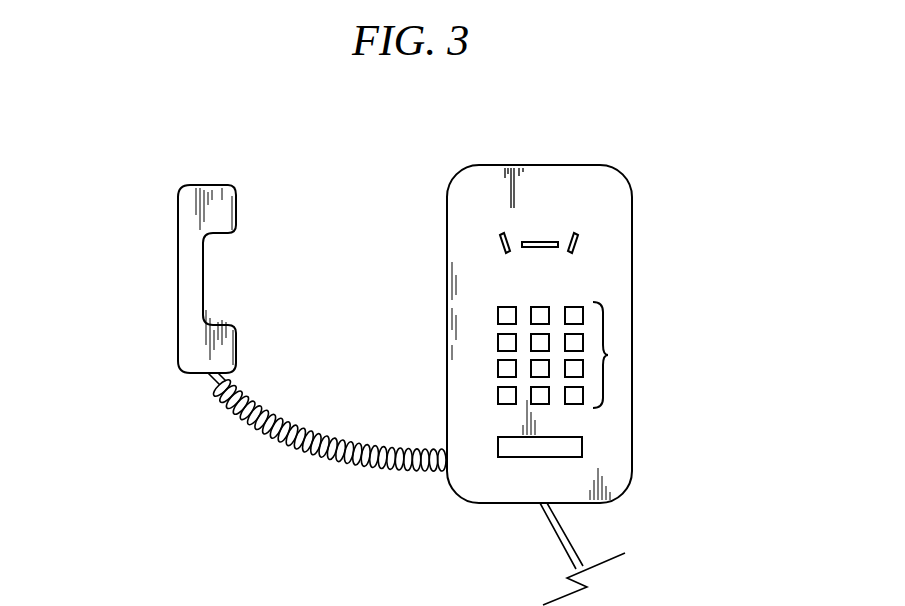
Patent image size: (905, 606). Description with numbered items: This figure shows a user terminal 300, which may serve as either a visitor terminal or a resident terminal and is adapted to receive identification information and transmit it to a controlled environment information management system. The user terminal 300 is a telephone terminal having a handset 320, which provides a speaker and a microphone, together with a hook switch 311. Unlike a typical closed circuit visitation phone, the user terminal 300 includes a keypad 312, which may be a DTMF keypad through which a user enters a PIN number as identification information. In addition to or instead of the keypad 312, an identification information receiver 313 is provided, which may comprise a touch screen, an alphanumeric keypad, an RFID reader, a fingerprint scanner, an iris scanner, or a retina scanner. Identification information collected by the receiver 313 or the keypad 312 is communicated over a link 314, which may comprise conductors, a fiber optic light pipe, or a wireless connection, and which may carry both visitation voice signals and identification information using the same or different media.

The user terminal 300 is at (694, 143).
The hook switch 311 is at (543, 240).
The keypad 312 is at (607, 355).
The identification information receiver 313 is at (582, 447).
The link 314 is at (557, 545).
The handset 320 is at (178, 258).